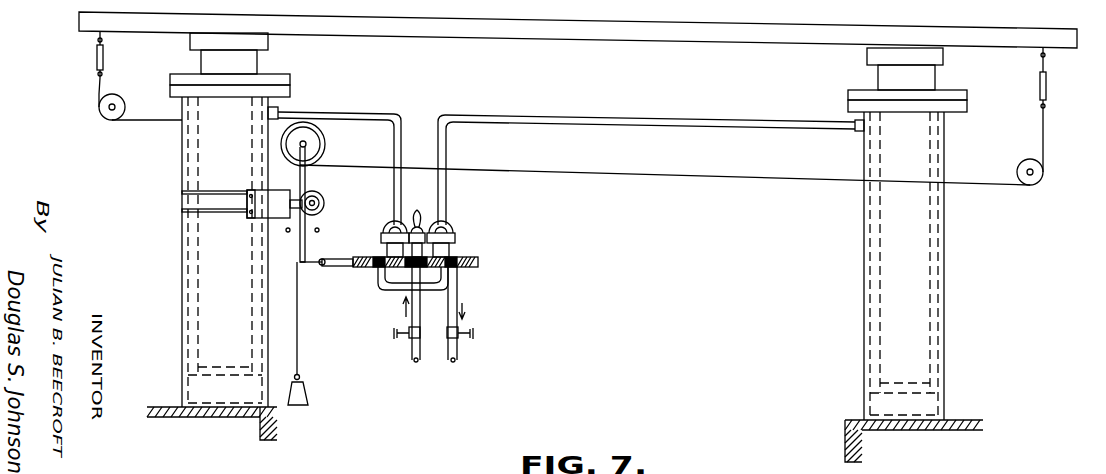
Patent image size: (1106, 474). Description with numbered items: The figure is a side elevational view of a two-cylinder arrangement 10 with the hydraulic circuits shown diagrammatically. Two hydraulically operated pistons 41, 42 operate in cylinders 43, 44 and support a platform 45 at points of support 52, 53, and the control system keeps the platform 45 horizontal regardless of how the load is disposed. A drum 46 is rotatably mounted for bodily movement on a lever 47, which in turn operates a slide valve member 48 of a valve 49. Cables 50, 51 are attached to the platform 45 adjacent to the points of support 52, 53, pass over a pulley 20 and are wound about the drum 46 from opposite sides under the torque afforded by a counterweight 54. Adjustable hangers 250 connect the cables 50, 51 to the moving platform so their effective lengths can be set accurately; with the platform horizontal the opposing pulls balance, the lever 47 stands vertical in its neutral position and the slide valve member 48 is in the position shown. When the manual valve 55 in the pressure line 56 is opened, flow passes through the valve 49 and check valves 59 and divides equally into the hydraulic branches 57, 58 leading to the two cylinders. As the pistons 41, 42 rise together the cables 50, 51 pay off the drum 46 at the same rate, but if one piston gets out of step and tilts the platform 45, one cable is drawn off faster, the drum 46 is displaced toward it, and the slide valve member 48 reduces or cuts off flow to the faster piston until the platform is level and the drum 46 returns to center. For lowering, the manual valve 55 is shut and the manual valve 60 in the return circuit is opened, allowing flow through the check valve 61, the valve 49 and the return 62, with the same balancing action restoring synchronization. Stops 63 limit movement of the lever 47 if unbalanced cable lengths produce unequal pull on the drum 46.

The testing apparatus 10 is at (252, 111).
The pulley 20 is at (104, 92).
The piston 41 is at (245, 62).
The piston 42 is at (935, 76).
The cylinder 43 is at (205, 162).
The cylinder 44 is at (920, 243).
The platform 45 is at (630, 23).
The drum 46 is at (306, 142).
The lever 47 is at (306, 182).
The slide valve member 48 is at (478, 262).
The valve 49 is at (456, 252).
The cable 50 is at (138, 120).
The cable 51 is at (818, 183).
The point of support 52 is at (232, 30).
The point of support 53 is at (905, 47).
The counterweight 54 is at (308, 395).
The manual valve 55 is at (408, 334).
The pressure line 56 is at (413, 365).
The hydraulic branch 57 is at (400, 116).
The hydraulic branch 58 is at (520, 117).
The check valve 59 is at (416, 228).
The manual valve 60 is at (476, 342).
The check valve 61 is at (383, 228).
The return 62 is at (458, 366).
The stop 63 is at (287, 232).
The adjustable hanger 250 is at (95, 55).